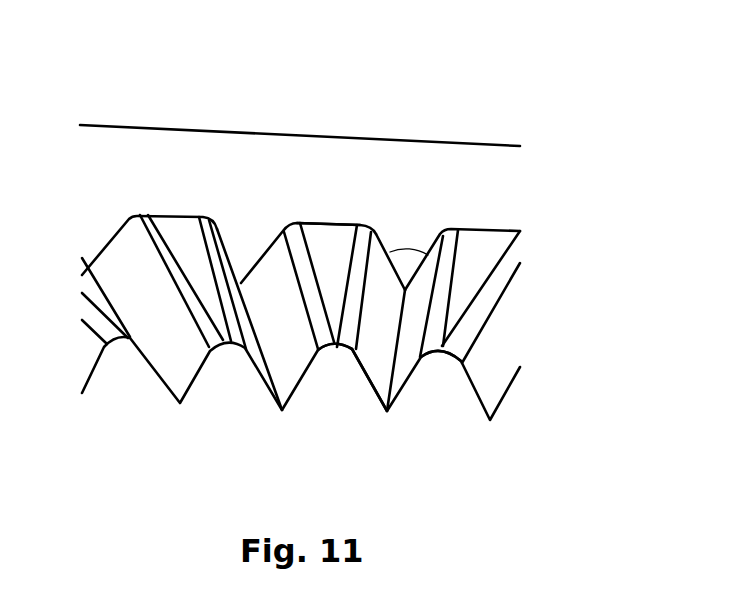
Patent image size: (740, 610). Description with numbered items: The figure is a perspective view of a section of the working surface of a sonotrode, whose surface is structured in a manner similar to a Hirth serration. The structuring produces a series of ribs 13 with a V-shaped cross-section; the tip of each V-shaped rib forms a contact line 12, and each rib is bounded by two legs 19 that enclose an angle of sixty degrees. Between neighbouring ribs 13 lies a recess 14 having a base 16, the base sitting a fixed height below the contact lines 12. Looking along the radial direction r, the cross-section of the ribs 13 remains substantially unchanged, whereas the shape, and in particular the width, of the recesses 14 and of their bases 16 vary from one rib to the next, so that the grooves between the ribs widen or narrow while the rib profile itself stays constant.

The contact lines 12 is at (252, 352).
The ribs 13 is at (243, 238).
The recess 14 is at (333, 388).
The base 16 is at (330, 232).
The legs 19 is at (372, 365).
The radial direction r is at (422, 392).